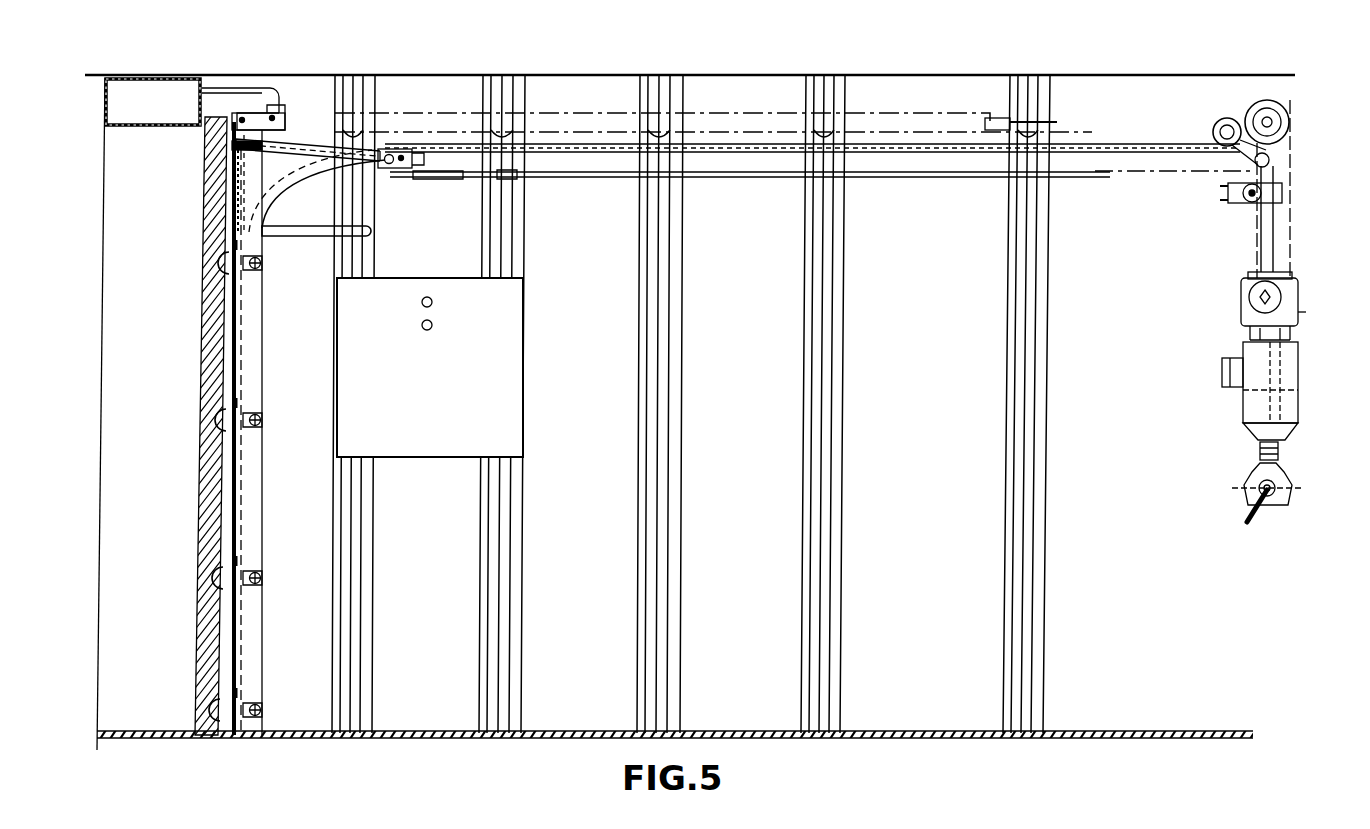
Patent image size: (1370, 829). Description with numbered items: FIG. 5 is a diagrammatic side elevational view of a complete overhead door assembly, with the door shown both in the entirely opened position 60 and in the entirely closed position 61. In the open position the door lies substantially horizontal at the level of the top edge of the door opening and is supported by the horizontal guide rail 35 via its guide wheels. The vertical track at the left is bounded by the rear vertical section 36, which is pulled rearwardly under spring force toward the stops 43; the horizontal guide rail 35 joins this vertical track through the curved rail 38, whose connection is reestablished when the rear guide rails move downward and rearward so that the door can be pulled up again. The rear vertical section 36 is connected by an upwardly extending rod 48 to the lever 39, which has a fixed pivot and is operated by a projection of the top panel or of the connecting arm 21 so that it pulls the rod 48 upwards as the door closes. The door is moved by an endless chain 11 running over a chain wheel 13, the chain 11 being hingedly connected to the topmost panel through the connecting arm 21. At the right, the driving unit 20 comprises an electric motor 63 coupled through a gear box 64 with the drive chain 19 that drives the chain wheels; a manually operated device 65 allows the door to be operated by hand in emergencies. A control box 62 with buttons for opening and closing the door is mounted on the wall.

The endless chain 11 is at (1148, 174).
The chain wheel 13 is at (393, 172).
The drive chain 19 is at (1284, 207).
The driving unit 20 is at (1306, 322).
The connecting arm 21 is at (298, 147).
The horizontal guide rail 35 is at (605, 154).
The rear vertical section 36 is at (242, 480).
The curved rail 38 is at (282, 186).
The lever 39 is at (253, 113).
The stops 43 is at (260, 266).
The rod 48 is at (240, 167).
The entirely opened door position 60 is at (758, 106).
The entirely closed door position 61 is at (192, 360).
The control box 62 is at (444, 378).
The electric motor 63 is at (1241, 405).
The gear box 64 is at (1290, 288).
The manually operated device 65 is at (1224, 488).